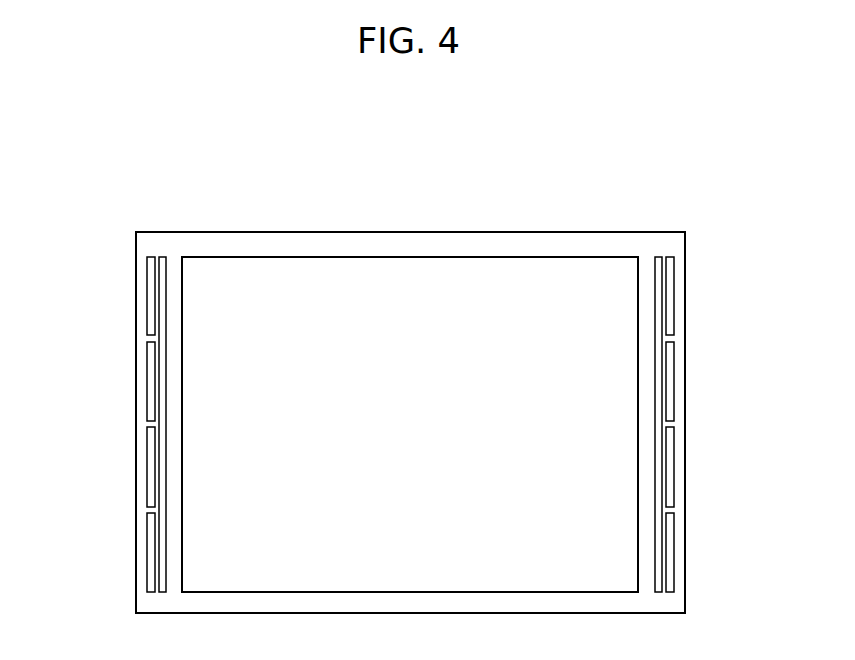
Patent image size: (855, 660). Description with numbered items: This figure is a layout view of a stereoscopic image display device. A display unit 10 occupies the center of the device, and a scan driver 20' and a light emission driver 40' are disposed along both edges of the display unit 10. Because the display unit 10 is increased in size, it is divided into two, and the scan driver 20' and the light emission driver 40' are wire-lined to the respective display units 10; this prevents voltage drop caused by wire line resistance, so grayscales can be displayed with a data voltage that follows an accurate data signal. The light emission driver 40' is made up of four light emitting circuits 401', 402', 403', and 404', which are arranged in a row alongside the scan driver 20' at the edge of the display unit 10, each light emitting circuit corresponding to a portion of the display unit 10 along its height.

The display unit 10 is at (423, 436).
The scan driver 20' is at (415, 390).
The light emission driver 40' is at (412, 424).
The light emitting circuit 401' is at (411, 296).
The light emitting circuit 402' is at (411, 381).
The light emitting circuit 403' is at (411, 467).
The light emitting circuit 404' is at (411, 552).